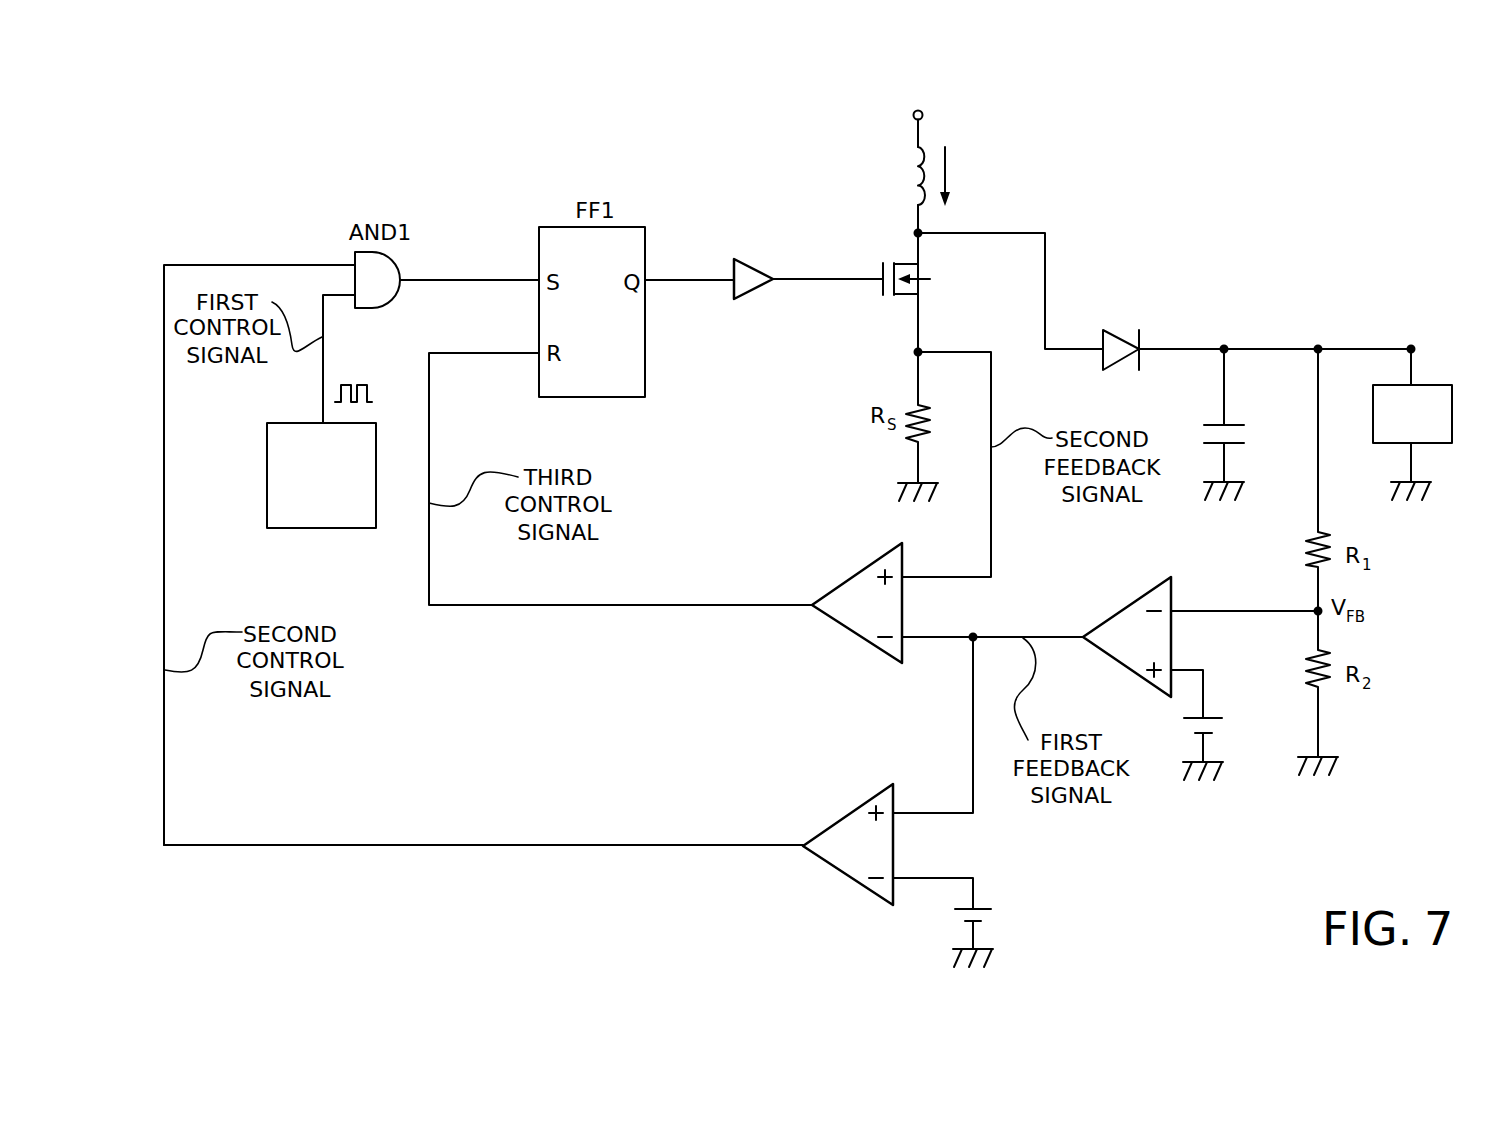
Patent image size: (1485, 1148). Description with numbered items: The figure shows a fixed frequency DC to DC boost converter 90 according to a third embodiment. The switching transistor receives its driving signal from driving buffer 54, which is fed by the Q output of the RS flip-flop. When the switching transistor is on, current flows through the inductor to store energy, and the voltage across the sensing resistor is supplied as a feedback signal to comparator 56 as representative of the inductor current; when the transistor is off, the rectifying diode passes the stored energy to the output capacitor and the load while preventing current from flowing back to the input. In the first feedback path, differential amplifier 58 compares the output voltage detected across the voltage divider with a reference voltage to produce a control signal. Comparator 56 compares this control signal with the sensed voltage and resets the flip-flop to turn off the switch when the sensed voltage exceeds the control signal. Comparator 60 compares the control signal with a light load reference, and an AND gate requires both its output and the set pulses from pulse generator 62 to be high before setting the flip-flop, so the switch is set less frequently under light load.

The driving buffer 54 is at (741, 258).
The comparator 56 is at (868, 566).
The differential amplifier 58 is at (1131, 674).
The comparator 60 is at (858, 805).
The pulse generator 62 is at (321, 475).
The DC to DC boost converter 90 is at (1124, 228).